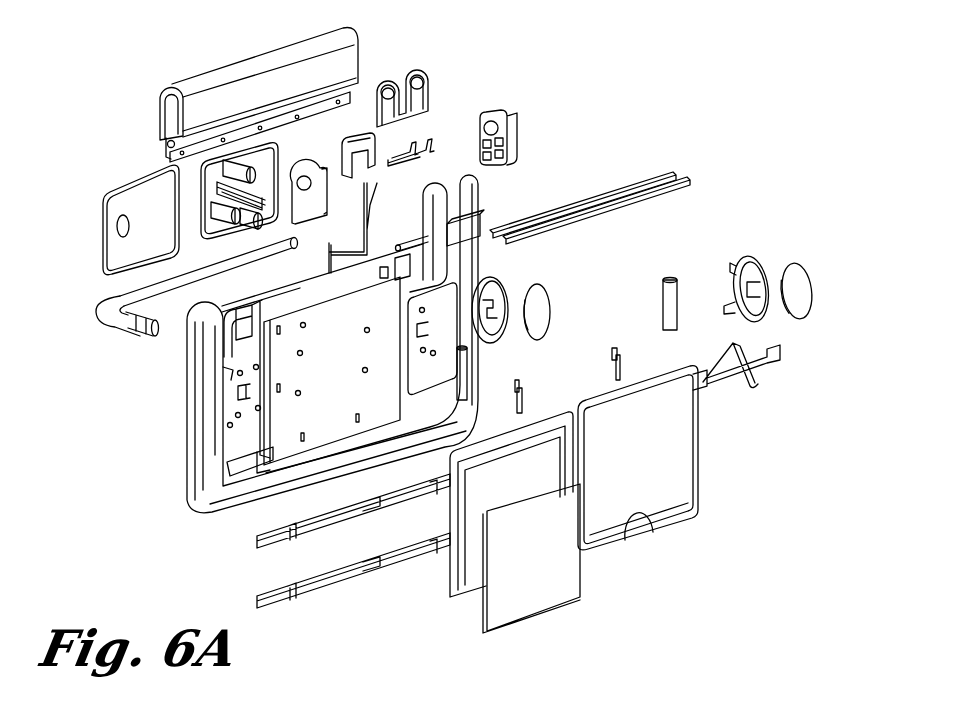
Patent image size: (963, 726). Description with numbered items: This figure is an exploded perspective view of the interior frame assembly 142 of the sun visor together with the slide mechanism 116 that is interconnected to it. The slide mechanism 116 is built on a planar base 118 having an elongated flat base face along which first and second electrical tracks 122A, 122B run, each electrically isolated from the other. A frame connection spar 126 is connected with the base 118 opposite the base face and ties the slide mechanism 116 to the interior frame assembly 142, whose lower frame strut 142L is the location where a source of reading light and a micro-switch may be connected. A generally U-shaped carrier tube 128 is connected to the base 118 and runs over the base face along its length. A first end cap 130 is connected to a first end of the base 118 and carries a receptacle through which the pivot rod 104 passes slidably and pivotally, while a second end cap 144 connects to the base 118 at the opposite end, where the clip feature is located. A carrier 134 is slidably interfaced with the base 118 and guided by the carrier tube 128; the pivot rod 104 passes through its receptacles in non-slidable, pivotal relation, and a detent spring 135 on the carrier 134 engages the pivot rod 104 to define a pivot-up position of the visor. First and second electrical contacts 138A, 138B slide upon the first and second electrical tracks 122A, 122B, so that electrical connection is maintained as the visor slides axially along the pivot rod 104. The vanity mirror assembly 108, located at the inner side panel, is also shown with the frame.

The pivot rod 104 is at (184, 298).
The vanity mirror assembly 108 is at (645, 578).
The slide mechanism 116 is at (189, 70).
The planar base 118 is at (173, 142).
The first electrical track 122A is at (645, 188).
The second electrical track 122B is at (555, 207).
The frame connection spar 126 is at (332, 118).
The carrier tube 128 is at (185, 81).
The first end cap 130 is at (527, 118).
The carrier 134 is at (437, 73).
The detent spring 135 is at (376, 163).
The first electrical contact 138A is at (430, 158).
The second electrical contact 138B is at (407, 143).
The interior frame assembly 142 is at (273, 391).
The lower frame strut 142L is at (253, 502).
The second end cap 144 is at (316, 232).